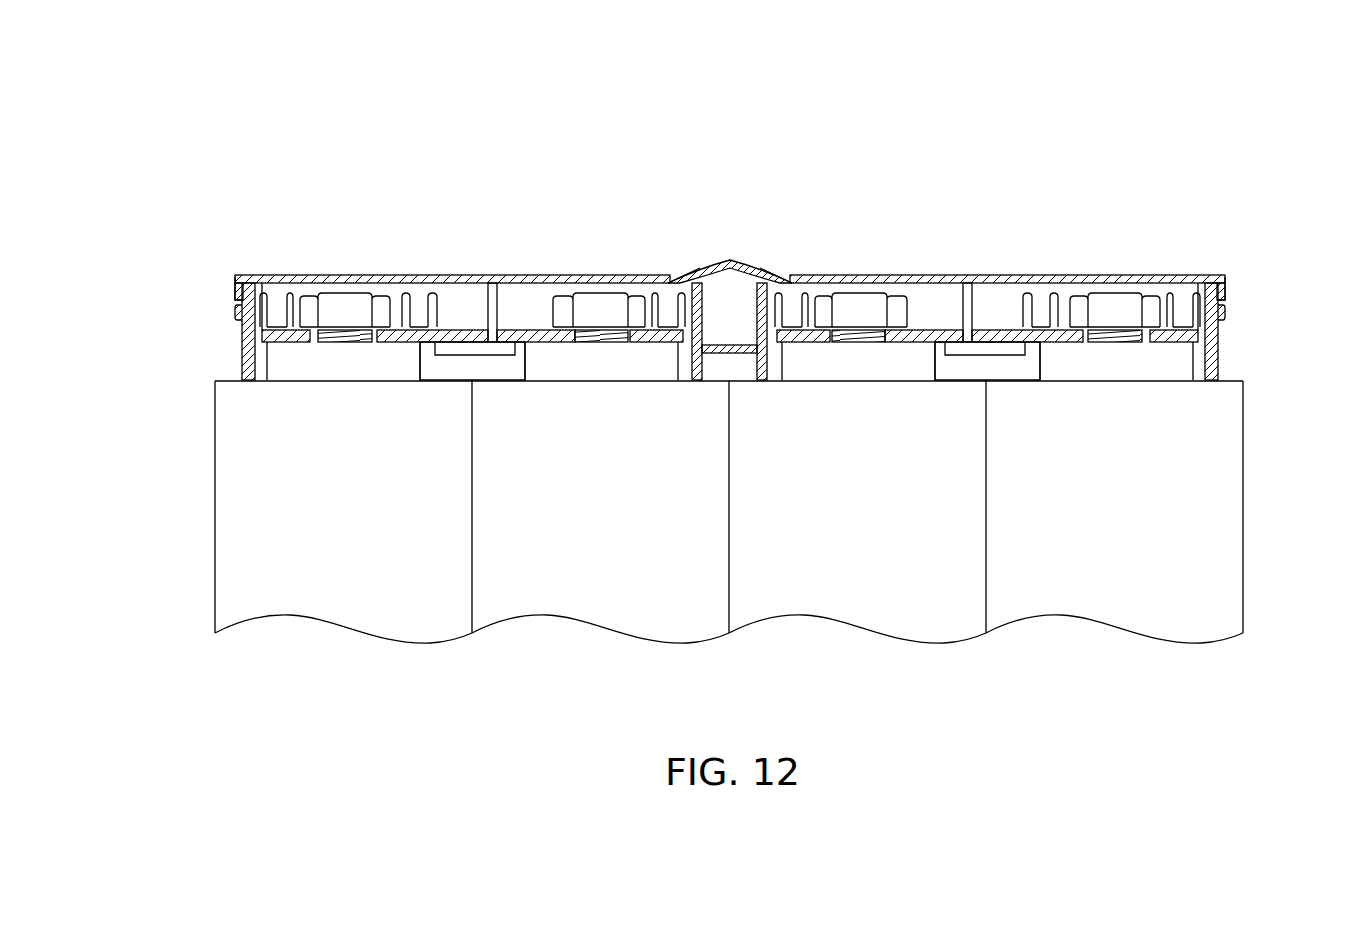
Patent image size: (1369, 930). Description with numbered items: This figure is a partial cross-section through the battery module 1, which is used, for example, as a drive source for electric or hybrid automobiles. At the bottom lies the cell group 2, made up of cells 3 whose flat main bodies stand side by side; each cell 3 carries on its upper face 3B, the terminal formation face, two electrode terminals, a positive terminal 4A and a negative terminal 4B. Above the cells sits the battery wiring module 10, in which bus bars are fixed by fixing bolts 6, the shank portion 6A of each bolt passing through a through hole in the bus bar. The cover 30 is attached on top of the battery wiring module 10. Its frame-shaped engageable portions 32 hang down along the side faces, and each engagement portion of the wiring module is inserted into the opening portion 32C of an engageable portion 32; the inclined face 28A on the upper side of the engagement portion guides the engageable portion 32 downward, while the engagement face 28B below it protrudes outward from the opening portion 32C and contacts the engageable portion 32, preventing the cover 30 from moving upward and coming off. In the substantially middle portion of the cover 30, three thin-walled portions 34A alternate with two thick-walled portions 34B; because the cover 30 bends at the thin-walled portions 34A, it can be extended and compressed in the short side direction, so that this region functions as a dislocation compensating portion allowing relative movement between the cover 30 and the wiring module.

The battery module 1 is at (747, 126).
The cell group 2 is at (1110, 578).
The cell 3 is at (747, 527).
The upper face 3B is at (1225, 380).
The positive terminal 4A is at (267, 359).
The negative terminal 4B is at (522, 362).
The fixing bolt 6 is at (343, 293).
The shank portion 6A is at (298, 342).
The battery wiring module 10 is at (1085, 276).
The inclined face 28A is at (238, 291).
The engagement face 28B is at (237, 318).
The cover 30 is at (1170, 276).
The engageable portion 32 is at (763, 253).
The opening portion 32C is at (243, 278).
The thin-walled portion 34A is at (675, 280).
The thick-walled portion 34B is at (702, 272).